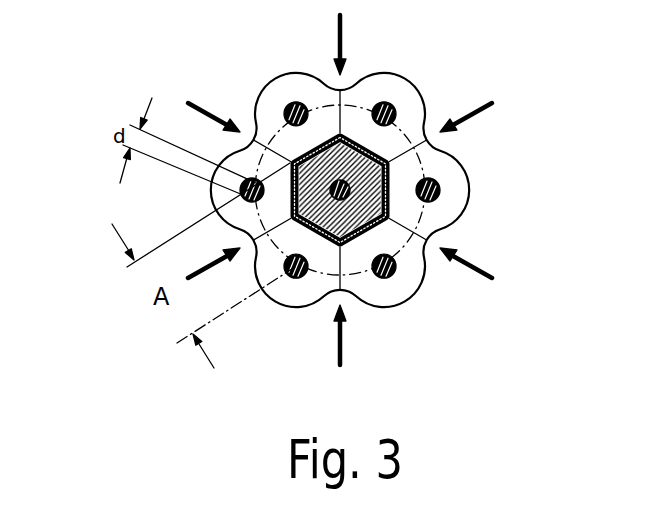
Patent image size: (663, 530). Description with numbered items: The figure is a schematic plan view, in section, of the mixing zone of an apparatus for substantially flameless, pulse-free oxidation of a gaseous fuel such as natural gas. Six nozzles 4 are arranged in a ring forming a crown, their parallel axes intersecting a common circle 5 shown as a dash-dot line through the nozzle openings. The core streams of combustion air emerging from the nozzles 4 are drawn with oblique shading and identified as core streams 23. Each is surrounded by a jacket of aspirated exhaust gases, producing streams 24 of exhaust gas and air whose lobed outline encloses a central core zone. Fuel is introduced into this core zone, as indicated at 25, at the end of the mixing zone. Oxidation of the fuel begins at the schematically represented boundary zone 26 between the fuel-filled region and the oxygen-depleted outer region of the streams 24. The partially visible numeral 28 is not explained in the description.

The nozzles 4 is at (393, 100).
The common circle 5 is at (430, 115).
The core streams of combustion air 23 is at (396, 273).
The streams of exhaust gas and air 24 is at (452, 200).
The fuel introduction 25 is at (398, 160).
The boundary zone 26 is at (323, 243).
The element 28 is at (161, 5).